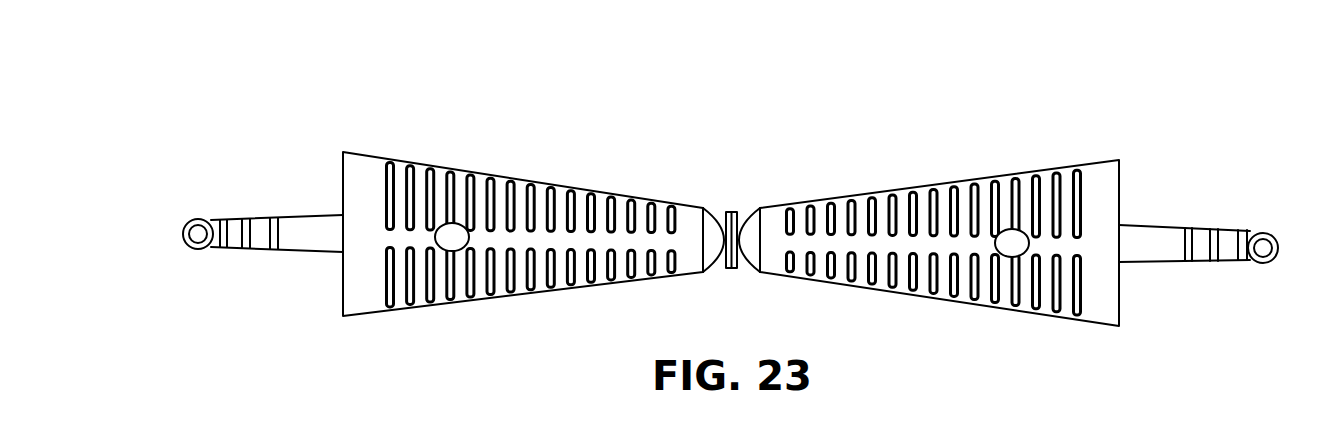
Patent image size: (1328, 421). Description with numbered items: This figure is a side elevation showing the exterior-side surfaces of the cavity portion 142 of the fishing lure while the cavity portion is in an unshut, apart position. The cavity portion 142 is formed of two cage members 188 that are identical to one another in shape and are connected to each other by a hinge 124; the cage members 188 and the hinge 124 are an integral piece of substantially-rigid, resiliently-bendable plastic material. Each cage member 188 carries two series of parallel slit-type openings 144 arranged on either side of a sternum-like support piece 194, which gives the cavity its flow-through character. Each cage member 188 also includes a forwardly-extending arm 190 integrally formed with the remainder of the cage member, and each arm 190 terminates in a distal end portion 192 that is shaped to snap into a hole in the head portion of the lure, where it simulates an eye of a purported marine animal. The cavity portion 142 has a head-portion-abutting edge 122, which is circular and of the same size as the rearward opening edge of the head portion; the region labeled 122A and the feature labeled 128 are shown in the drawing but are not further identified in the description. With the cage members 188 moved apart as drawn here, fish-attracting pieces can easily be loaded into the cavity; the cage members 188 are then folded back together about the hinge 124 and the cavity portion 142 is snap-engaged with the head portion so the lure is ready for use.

The cavity portion 142 is at (597, 143).
The slit-type openings 144 is at (437, 172).
The head-portion-abutting edge 122 is at (343, 268).
The tab end 122A is at (190, 247).
The hinge 124 is at (730, 212).
The inner edge 128 is at (712, 215).
The cage member 188 is at (366, 283).
The forwardly-extending arm 190 is at (315, 232).
The distal end portion 192 is at (196, 222).
The sternum-like support piece 194 is at (485, 239).